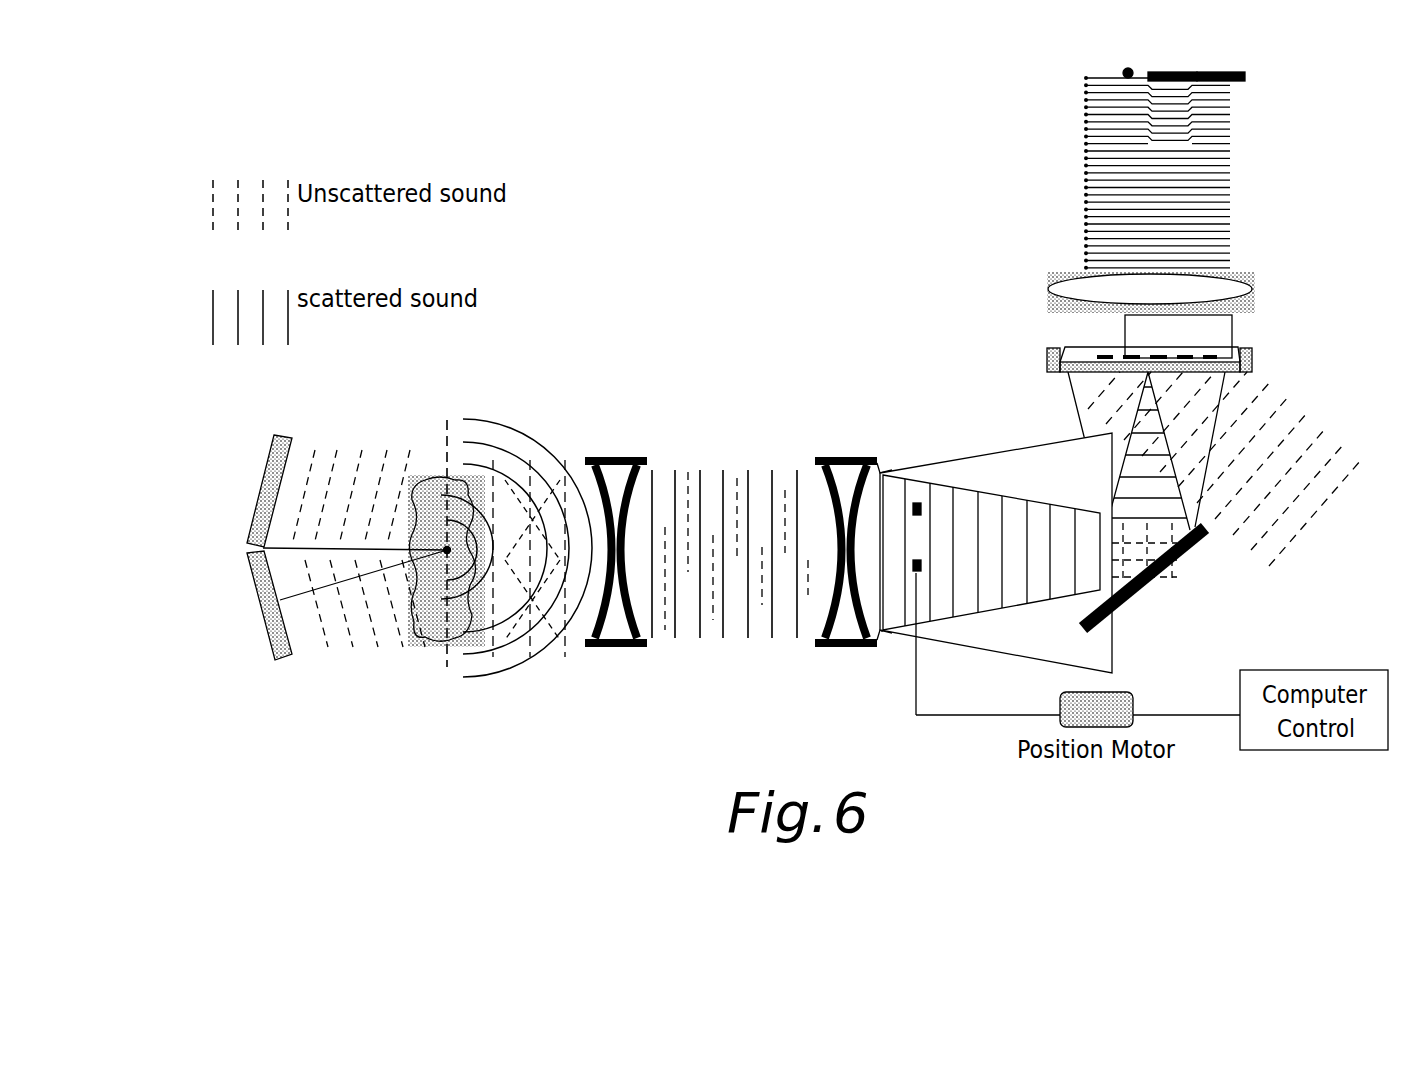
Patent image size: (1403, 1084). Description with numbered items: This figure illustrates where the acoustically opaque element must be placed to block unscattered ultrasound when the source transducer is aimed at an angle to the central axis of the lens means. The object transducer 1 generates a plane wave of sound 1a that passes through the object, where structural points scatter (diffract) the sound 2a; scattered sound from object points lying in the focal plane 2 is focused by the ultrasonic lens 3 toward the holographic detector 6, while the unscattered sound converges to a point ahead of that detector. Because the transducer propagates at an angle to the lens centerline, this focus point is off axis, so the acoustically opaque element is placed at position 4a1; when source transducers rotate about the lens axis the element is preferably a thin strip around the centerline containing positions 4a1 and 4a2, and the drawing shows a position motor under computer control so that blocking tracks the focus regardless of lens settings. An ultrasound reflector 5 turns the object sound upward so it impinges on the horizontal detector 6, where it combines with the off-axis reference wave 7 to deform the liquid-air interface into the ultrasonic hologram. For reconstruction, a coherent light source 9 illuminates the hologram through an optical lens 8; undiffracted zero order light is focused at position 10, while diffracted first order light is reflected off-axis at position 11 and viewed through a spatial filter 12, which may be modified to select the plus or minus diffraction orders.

The object transducer 1 is at (347, 565).
The plane wave of sound 1a is at (342, 452).
The focal plane 2 is at (446, 557).
The scattered sound 2a is at (523, 427).
The ultrasonic lens 3 is at (731, 577).
The acoustically opaque element position 4a1 is at (920, 495).
The acoustically opaque element position 4a2 is at (920, 590).
The ultrasound reflector 5 is at (1144, 578).
The holographic detector 6 is at (1252, 358).
The reference wave 7 is at (1224, 469).
The optical lens 8 is at (1159, 286).
The coherent light source 9 is at (1119, 67).
The zero order focus position 10 is at (1172, 66).
The first order position 11 is at (1211, 66).
The spatial filter 12 is at (1174, 173).